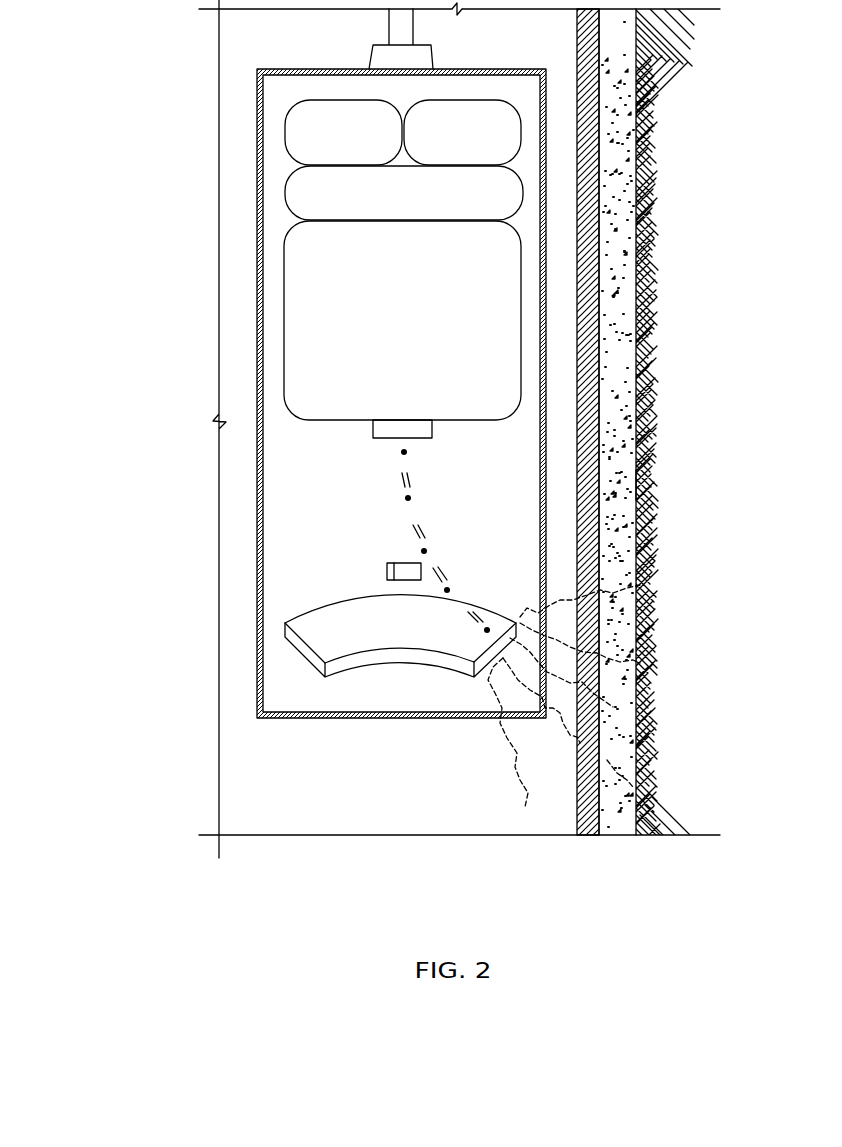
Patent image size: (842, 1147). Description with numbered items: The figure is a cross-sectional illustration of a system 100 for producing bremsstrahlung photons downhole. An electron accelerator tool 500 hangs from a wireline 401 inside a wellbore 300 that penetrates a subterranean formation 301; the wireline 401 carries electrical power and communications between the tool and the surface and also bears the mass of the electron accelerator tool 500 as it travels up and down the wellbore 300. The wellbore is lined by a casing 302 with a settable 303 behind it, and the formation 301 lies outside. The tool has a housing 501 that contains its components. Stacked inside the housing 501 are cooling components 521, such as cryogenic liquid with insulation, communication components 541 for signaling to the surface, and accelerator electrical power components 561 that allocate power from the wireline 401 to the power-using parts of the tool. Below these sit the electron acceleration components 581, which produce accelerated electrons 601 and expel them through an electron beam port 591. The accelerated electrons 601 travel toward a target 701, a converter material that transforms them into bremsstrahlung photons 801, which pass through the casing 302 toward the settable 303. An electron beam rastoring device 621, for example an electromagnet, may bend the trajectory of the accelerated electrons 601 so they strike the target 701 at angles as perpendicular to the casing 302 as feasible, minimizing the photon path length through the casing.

The system 100 is at (116, 72).
The wellbore 300 is at (640, 398).
The subterranean formation 301 is at (650, 494).
The casing 302 is at (593, 178).
The settable 303 is at (628, 288).
The wireline 401 is at (389, 22).
The electron accelerator tool 500 is at (232, 195).
The housing 501 is at (290, 69).
The cooling components 521 is at (328, 145).
The communication components 541 is at (446, 145).
The accelerator electrical power components 561 is at (388, 210).
The electron acceleration components 581 is at (388, 333).
The electron beam port 591 is at (371, 432).
The accelerated electrons 601 is at (405, 499).
The electron beam rastoring device 621 is at (386, 571).
The target 701 is at (388, 630).
The bremsstrahlung photons 801 is at (512, 768).